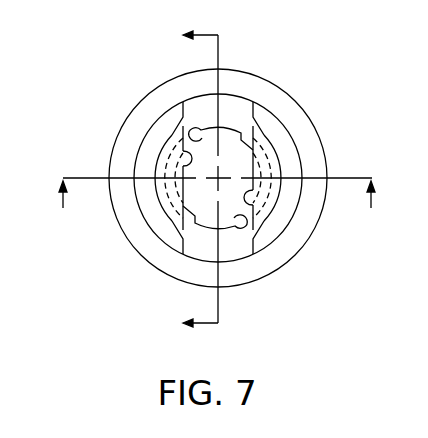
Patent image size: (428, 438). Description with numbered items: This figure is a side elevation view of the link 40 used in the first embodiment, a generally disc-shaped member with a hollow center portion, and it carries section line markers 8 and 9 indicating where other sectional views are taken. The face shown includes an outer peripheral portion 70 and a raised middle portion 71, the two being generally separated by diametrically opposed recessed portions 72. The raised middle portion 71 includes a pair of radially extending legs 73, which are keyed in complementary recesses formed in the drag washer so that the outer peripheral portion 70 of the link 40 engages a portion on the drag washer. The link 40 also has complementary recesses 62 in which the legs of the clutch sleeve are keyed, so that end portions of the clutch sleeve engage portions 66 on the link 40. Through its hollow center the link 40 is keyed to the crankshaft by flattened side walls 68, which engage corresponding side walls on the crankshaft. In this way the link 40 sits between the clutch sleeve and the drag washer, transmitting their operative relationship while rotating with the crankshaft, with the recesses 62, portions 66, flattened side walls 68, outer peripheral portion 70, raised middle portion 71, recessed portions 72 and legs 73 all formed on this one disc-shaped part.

The link 40 is at (200, 175).
The complementary recesses 62 is at (182, 150).
The portions 66 is at (265, 145).
The flattened side walls 68 is at (186, 158).
The outer peripheral portion 70 is at (113, 203).
The raised middle portion 71 is at (160, 216).
The recessed portions 72 is at (142, 208).
The radially extending legs 73 is at (232, 112).
The section line 8- 8 is at (215, 178).
The section line 9- 9 is at (188, 182).